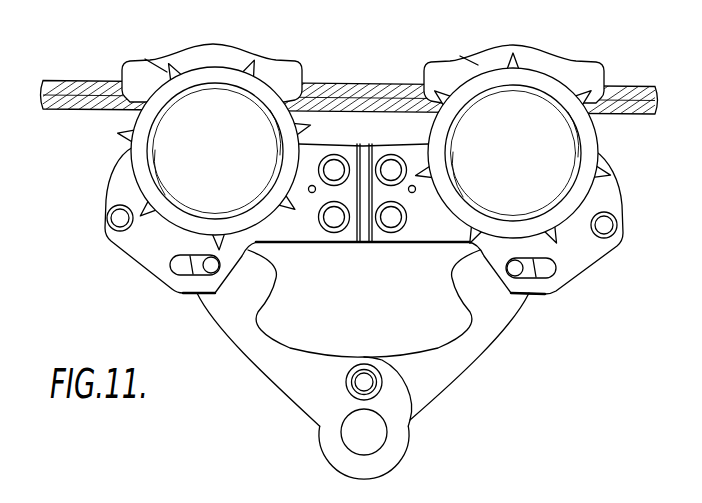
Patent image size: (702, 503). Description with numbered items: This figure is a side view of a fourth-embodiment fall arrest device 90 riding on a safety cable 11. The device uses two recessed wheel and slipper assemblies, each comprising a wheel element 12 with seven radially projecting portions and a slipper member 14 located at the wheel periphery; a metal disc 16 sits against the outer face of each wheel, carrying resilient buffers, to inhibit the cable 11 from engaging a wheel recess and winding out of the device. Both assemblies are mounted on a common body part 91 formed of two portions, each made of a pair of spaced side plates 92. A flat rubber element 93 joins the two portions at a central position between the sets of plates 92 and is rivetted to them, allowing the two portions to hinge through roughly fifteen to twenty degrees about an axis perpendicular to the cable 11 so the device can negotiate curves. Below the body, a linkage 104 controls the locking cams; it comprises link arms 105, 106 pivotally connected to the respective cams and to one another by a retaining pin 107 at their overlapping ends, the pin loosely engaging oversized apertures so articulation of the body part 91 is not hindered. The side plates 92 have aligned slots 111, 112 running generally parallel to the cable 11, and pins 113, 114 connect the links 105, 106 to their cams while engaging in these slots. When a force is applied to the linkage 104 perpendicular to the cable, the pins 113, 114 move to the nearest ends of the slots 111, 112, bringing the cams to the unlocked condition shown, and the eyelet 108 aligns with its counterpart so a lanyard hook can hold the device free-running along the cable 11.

The safety cable 11 is at (366, 82).
The wheel element 12 is at (166, 70).
The slipper member 14 is at (230, 58).
The metal disc 16 is at (137, 158).
The fall arrest device 90 is at (615, 66).
The body part 91 is at (103, 231).
The side plates 92 is at (148, 261).
The flat rubber element 93 is at (358, 244).
The linkage 104 is at (363, 364).
The link arm 105 is at (263, 363).
The link arm 106 is at (464, 358).
The retaining pin 107 is at (362, 377).
The eyelet 108 is at (348, 428).
The slot 111 is at (183, 279).
The slot 112 is at (547, 281).
The pin 113 is at (213, 274).
The pin 114 is at (514, 277).